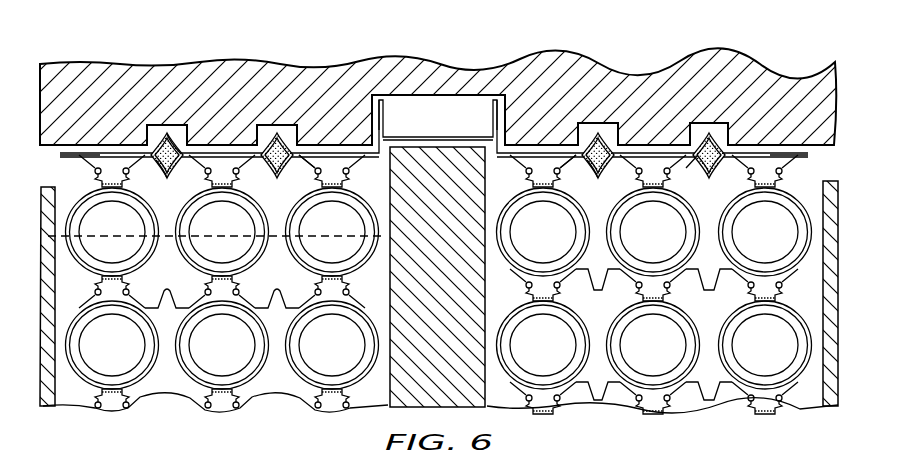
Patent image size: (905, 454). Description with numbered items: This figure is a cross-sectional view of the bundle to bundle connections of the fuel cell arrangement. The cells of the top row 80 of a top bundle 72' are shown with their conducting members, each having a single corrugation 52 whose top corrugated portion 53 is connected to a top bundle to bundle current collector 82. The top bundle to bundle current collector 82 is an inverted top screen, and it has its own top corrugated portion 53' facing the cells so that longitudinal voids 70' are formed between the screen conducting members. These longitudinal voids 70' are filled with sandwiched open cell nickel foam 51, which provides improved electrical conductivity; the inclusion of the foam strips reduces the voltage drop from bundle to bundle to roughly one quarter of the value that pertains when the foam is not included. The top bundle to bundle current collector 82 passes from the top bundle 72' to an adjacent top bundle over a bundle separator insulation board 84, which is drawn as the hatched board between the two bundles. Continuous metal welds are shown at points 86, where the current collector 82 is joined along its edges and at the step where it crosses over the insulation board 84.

The top corrugated portion of the top bundle to bundle current collector 53' is at (427, 104).
The longitudinal voids 70' is at (444, 104).
The top bundle to bundle current collector 82 is at (222, 153).
The continuous metal welds 86 is at (506, 107).
The top corrugated portion 53 is at (367, 178).
The single corrugation 52 is at (181, 172).
The open cell nickel foam 51 is at (264, 166).
The top row 80 is at (44, 236).
The bundle separator insulation board 84 is at (470, 292).
The top bundle 72' is at (436, 284).